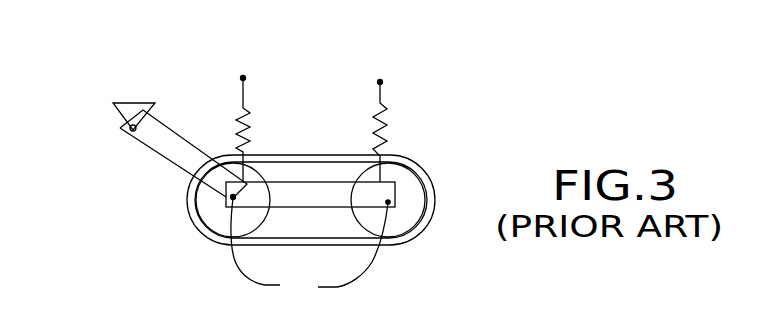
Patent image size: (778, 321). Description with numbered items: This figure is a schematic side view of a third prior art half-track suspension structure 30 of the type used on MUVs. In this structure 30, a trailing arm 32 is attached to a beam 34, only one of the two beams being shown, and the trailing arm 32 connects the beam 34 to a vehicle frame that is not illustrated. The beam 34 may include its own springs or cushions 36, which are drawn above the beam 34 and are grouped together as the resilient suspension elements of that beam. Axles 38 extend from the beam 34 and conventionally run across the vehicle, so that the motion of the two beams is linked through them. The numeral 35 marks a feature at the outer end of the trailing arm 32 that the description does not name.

The structure 30 is at (132, 202).
The trailing arm 32 is at (178, 137).
The beam 34 is at (293, 182).
The pivot / head 35 is at (128, 102).
The springs or cushions 36 is at (378, 102).
The axles 38 is at (309, 249).